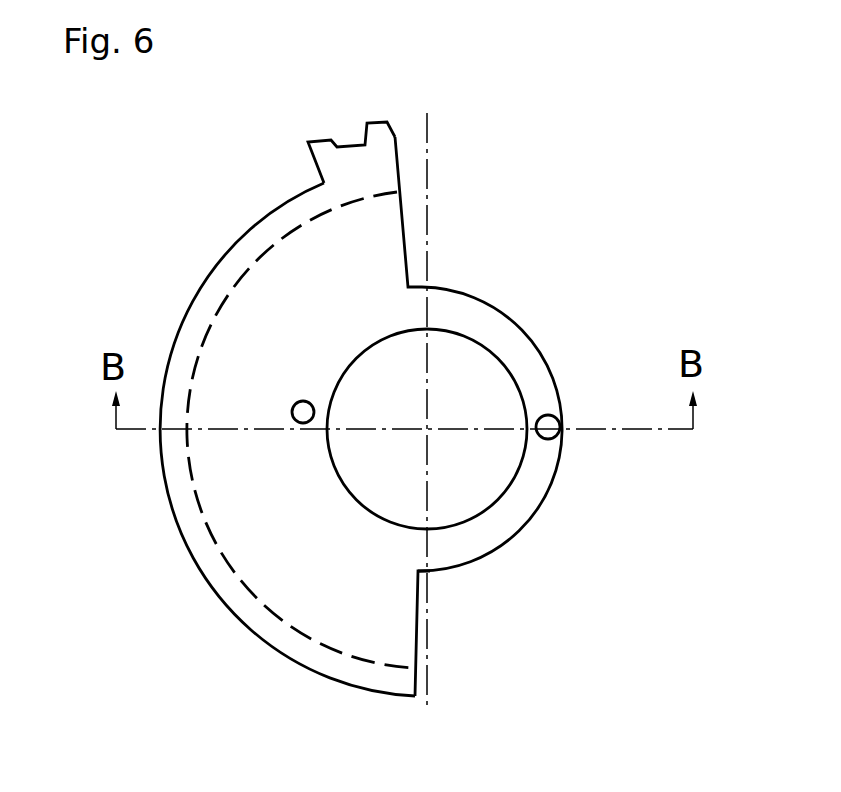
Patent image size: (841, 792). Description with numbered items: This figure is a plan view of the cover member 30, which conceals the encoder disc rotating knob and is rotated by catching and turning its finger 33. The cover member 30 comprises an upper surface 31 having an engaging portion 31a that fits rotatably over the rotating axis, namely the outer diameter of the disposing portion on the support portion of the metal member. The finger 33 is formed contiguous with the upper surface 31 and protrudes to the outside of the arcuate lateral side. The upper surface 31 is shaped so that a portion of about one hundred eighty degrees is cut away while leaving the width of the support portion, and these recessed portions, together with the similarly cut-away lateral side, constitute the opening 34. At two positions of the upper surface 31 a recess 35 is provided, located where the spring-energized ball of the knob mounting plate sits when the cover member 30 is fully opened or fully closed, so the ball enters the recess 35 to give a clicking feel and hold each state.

The cover member 30 is at (170, 180).
The upper surface 31 is at (380, 588).
The engaging portion 31a is at (455, 518).
The finger 33 is at (321, 137).
The opening 34 is at (403, 225).
The recess 35 is at (311, 404).